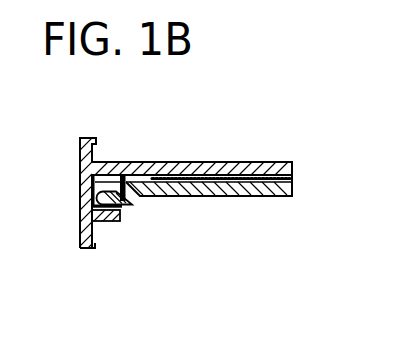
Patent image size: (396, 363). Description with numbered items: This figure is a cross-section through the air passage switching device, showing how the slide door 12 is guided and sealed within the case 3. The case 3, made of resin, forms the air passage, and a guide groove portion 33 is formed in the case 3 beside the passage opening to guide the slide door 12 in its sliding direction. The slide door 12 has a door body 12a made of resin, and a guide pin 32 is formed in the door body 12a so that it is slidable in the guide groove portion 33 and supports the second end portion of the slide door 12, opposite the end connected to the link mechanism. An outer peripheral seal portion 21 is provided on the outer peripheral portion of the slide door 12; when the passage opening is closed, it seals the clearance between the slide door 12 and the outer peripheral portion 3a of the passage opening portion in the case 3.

The case 3 is at (80, 172).
The outer peripheral portion of passage opening portion 3a is at (195, 166).
The outer peripheral seal portion 21 is at (267, 168).
The door body 12a is at (222, 190).
The slide door 12 is at (223, 197).
The guide pin 32 is at (113, 196).
The guide groove portion 33 is at (102, 213).